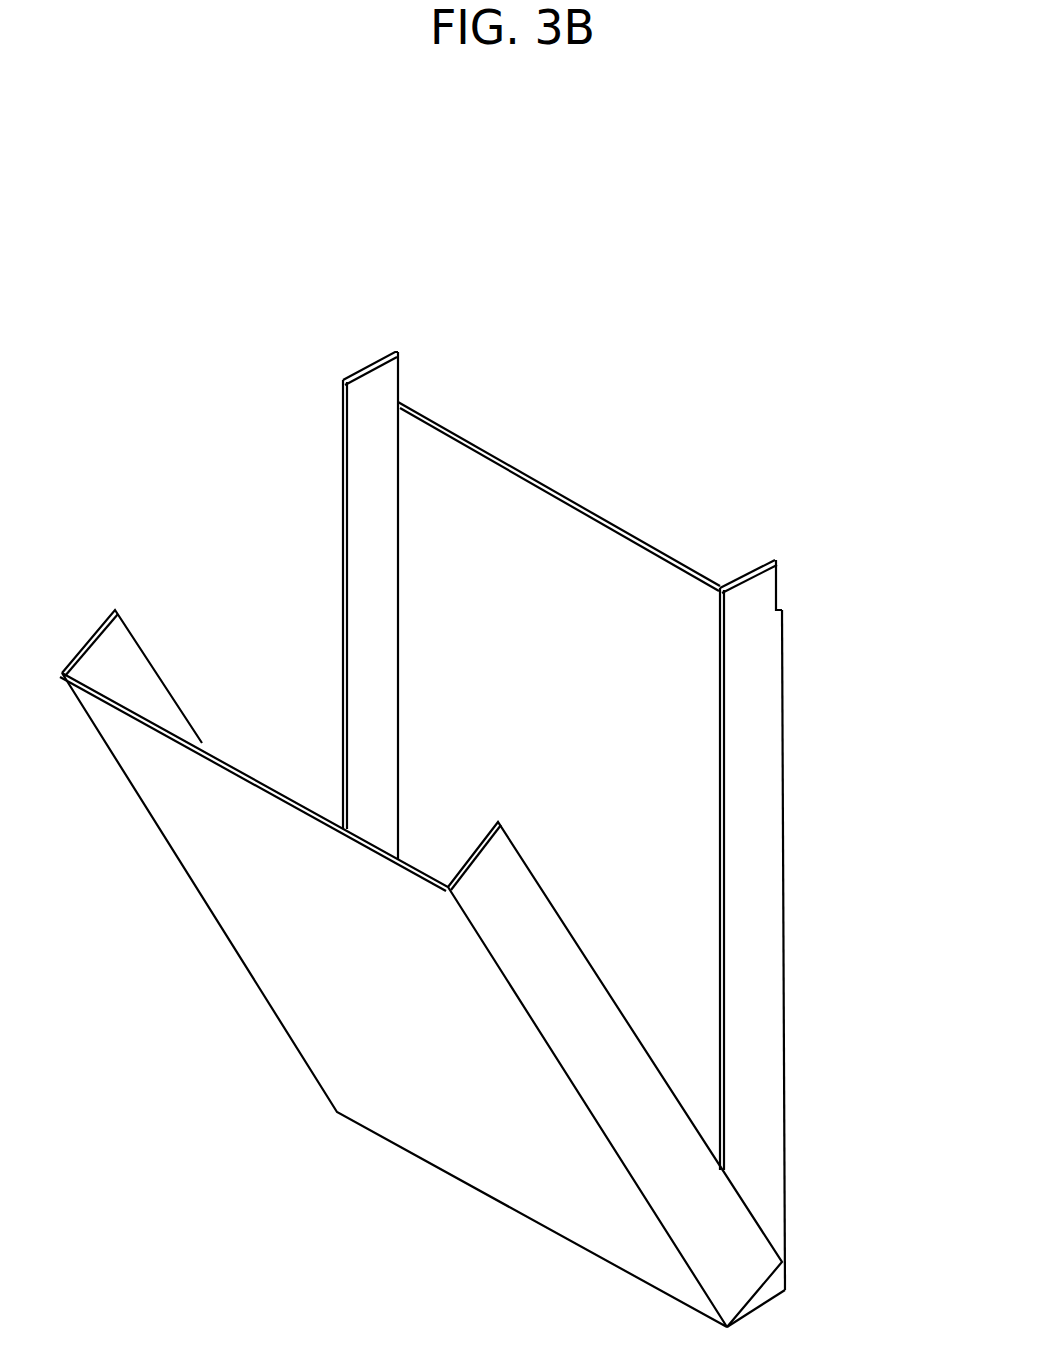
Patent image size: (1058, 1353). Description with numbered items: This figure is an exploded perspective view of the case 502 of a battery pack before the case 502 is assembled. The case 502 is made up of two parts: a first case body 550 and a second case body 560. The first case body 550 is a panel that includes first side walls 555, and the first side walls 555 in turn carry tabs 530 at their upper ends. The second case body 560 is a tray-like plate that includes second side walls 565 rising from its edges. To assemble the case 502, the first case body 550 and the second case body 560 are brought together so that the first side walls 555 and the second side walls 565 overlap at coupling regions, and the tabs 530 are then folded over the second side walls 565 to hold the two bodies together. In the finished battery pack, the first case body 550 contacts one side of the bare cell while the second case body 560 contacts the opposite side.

The case 502 is at (692, 307).
The tabs 530 is at (400, 366).
The first case body 550 is at (603, 503).
The first side walls 555 is at (368, 482).
The second case body 560 is at (205, 905).
The second side walls 565 is at (145, 668).